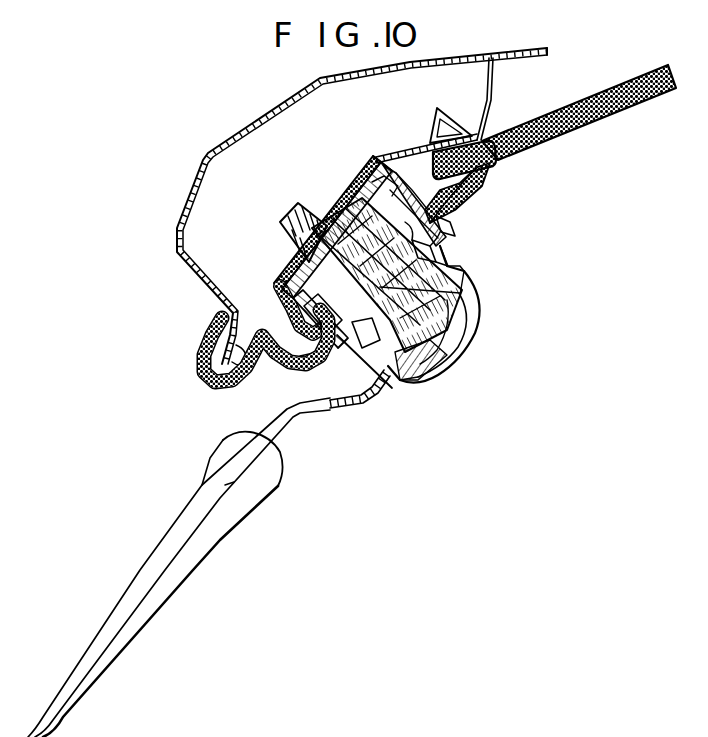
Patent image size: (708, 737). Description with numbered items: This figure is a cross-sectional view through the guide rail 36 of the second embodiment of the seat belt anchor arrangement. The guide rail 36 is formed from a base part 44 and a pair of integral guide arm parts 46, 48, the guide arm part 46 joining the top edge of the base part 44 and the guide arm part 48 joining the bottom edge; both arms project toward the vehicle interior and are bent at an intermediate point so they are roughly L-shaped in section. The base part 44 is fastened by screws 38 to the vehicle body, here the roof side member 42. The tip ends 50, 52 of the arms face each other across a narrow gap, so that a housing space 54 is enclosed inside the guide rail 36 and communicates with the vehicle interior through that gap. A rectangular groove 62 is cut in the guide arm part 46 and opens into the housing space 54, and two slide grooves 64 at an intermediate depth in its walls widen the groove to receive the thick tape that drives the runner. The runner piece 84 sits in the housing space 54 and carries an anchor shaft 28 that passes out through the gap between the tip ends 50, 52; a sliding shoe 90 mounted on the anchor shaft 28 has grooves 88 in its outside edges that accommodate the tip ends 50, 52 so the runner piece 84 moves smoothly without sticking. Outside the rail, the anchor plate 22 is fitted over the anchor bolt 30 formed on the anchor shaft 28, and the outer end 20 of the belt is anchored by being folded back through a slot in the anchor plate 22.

The outer end 20 is at (233, 528).
The anchor plate 22 is at (313, 413).
The anchor shaft 28 is at (403, 265).
The anchor bolt 30 is at (478, 310).
The guide rail 36 is at (377, 157).
The screws 38 is at (288, 237).
The roof side member 42 is at (200, 287).
The base part 44 is at (343, 217).
The guide arm part 46 is at (481, 188).
The guide arm part 48 is at (283, 368).
The tip end 50 is at (425, 250).
The tip end 52 is at (370, 385).
The housing space 54 is at (352, 200).
The rectangular groove 62 is at (384, 158).
The slide grooves 64 is at (447, 227).
The runner piece 84 is at (317, 327).
The grooves 88 is at (339, 359).
The sliding shoe 90 is at (352, 328).